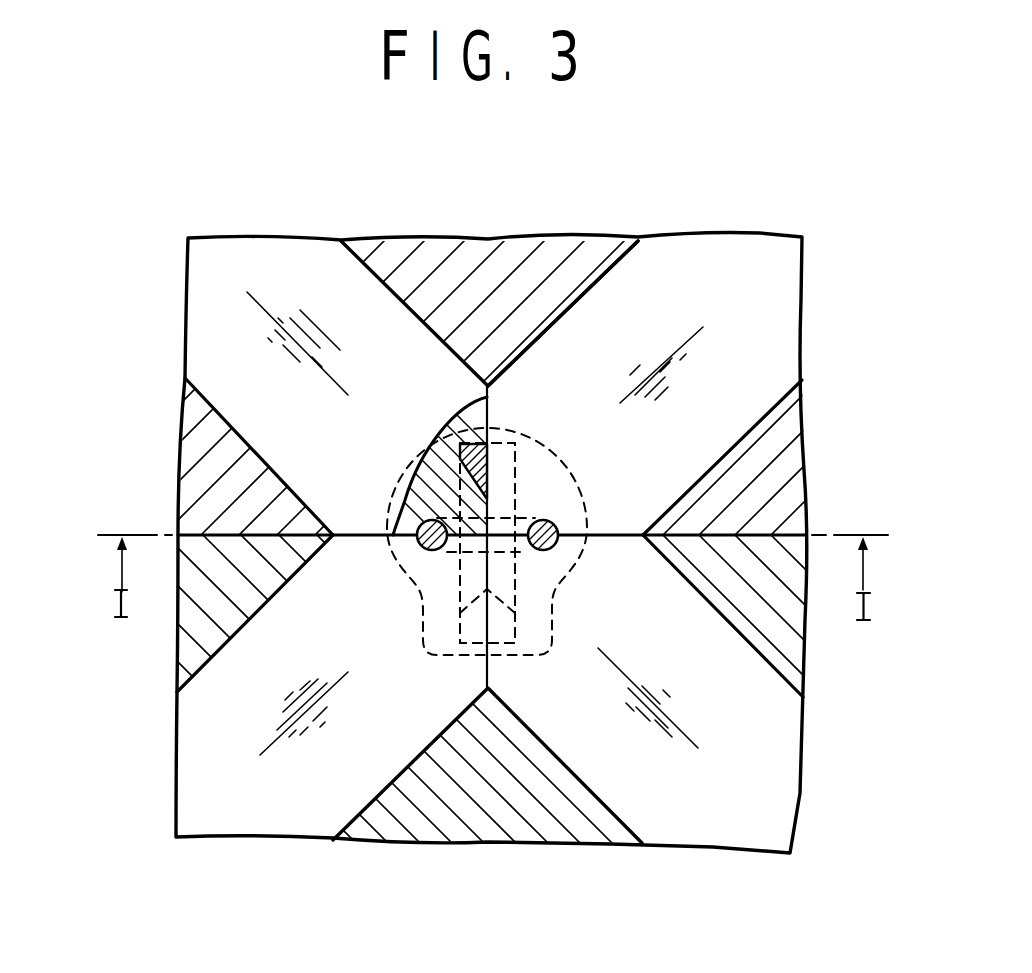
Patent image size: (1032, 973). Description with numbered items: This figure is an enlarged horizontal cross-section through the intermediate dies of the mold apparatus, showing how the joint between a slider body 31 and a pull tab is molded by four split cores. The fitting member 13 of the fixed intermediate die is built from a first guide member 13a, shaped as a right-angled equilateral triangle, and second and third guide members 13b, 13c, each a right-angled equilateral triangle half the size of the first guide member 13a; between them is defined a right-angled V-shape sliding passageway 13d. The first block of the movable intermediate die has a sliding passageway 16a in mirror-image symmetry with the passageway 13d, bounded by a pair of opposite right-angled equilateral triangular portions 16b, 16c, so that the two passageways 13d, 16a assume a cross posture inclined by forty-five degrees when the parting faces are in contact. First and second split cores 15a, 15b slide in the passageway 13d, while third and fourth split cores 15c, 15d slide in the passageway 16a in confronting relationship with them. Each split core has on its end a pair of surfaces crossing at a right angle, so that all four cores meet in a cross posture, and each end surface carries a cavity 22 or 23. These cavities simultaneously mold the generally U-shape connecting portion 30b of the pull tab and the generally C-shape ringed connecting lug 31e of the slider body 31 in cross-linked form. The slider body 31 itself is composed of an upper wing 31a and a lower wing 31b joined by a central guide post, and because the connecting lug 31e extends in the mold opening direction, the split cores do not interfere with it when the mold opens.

The fitting member 13 is at (808, 432).
The first guide member 13a is at (455, 275).
The second guide member 13b is at (215, 496).
The third guide member 13c is at (777, 477).
The V-shape sliding passageway 13d is at (597, 281).
The first split core 15a is at (222, 312).
The second split core 15b is at (777, 314).
The third split core 15c is at (273, 795).
The fourth split core 15d is at (693, 793).
The sliding passageway 16a is at (210, 651).
The right-angled equilateral triangular portion 16b is at (214, 589).
The right-angled equilateral triangular portion 16c is at (780, 608).
The cavity 22 is at (427, 549).
The cavity 23 is at (509, 445).
The connecting portion 30b is at (548, 520).
The slider body 31 is at (423, 658).
The upper wing 31a is at (551, 632).
The lower wing 31b is at (487, 543).
The connecting lug 31e is at (458, 455).